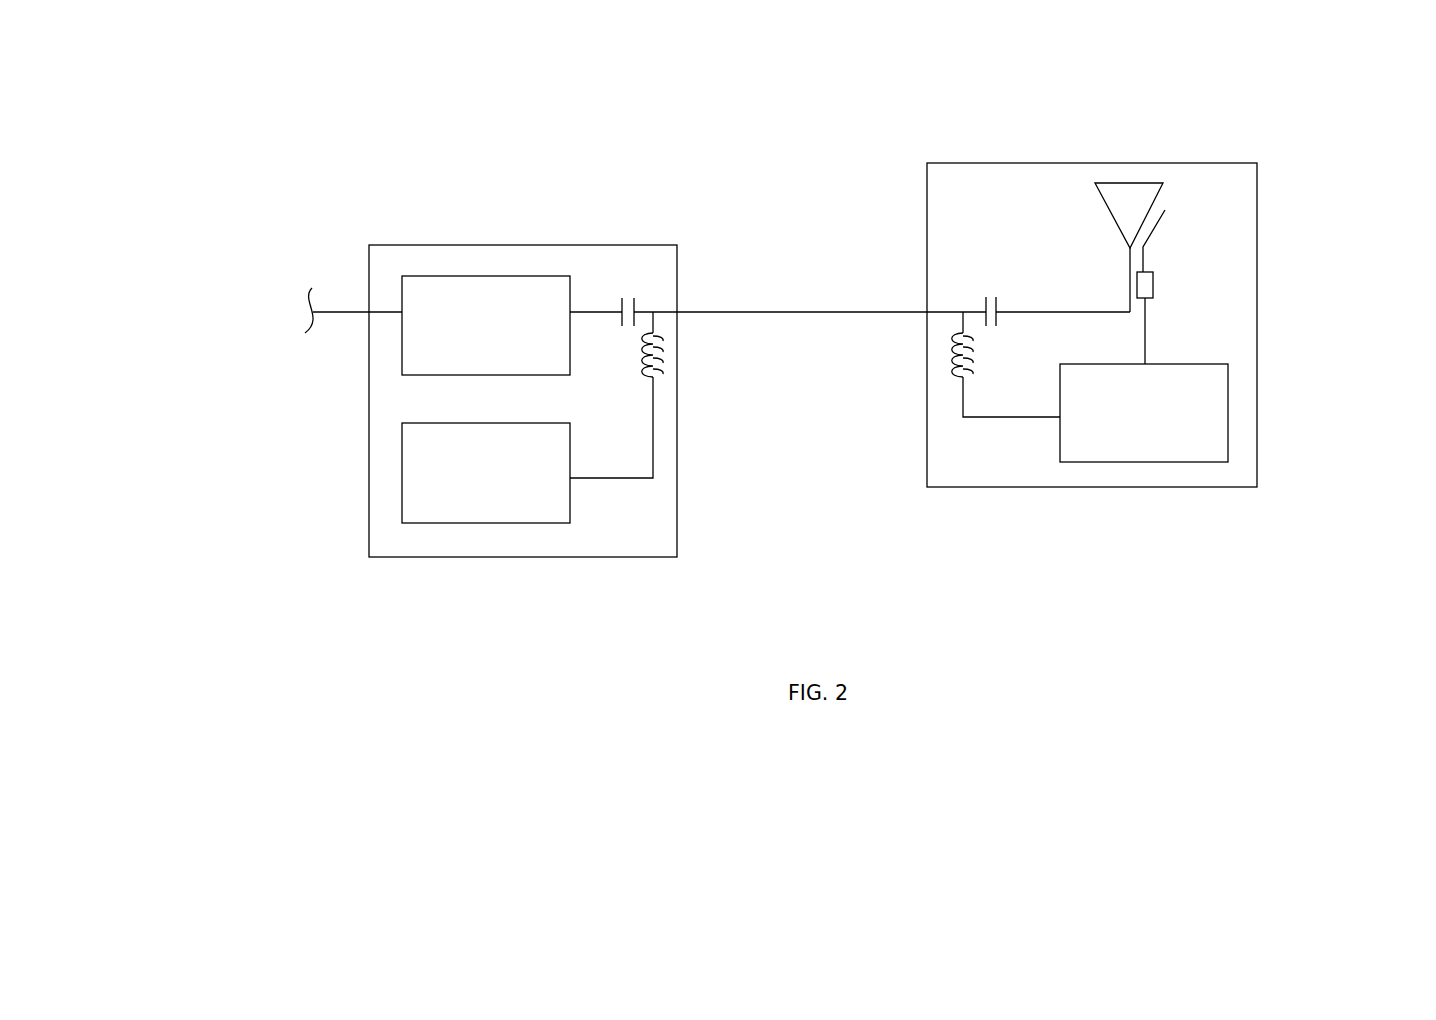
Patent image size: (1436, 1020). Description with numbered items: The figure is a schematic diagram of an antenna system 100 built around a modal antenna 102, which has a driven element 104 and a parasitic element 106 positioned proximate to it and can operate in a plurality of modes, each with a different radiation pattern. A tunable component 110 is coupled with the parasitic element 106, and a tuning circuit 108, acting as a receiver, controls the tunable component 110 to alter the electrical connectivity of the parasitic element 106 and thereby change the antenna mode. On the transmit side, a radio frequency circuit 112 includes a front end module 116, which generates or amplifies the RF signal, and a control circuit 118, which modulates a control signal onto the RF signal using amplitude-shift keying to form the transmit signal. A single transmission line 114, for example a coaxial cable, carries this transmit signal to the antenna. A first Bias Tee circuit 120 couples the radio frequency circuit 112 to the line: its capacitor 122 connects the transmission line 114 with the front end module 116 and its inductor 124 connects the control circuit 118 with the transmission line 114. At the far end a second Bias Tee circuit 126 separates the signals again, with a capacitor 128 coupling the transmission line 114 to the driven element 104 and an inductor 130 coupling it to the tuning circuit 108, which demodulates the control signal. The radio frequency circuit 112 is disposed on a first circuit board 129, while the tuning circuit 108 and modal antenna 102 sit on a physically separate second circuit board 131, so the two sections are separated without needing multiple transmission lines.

The antenna system 100 is at (280, 82).
The modal antenna 102 is at (1325, 165).
The driven element 104 is at (1157, 193).
The parasitic element 106 is at (1155, 227).
The tuning circuit 108 is at (1163, 428).
The tunable component 110 is at (1155, 296).
The radio frequency circuit 112 is at (420, 245).
The transmission line 114 is at (778, 312).
The front end module 116 is at (504, 340).
The control circuit 118 is at (504, 488).
The first Bias Tee circuit 120 is at (668, 321).
The capacitor 122 is at (637, 300).
The inductor 124 is at (663, 360).
The second Bias Tee circuit 126 is at (945, 325).
The capacitor 128 is at (984, 304).
The first circuit board 129 is at (523, 401).
The inductor 130 is at (957, 365).
The second circuit board 131 is at (1033, 162).